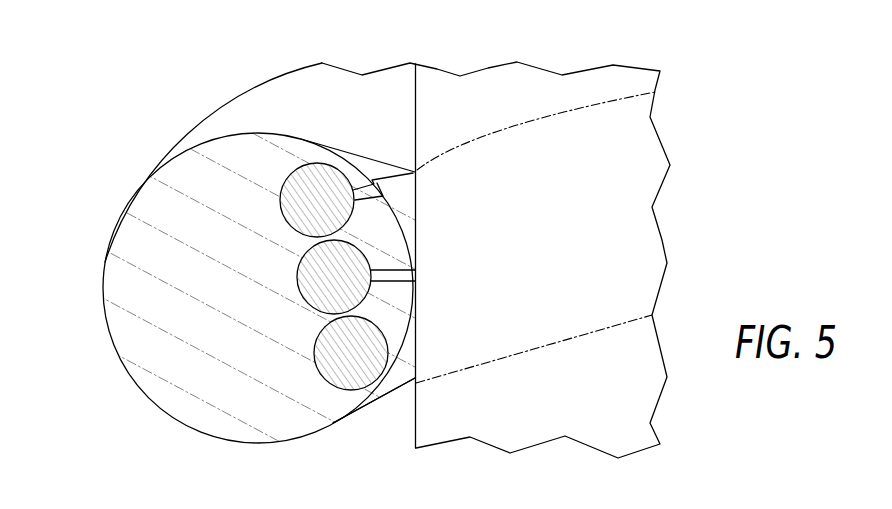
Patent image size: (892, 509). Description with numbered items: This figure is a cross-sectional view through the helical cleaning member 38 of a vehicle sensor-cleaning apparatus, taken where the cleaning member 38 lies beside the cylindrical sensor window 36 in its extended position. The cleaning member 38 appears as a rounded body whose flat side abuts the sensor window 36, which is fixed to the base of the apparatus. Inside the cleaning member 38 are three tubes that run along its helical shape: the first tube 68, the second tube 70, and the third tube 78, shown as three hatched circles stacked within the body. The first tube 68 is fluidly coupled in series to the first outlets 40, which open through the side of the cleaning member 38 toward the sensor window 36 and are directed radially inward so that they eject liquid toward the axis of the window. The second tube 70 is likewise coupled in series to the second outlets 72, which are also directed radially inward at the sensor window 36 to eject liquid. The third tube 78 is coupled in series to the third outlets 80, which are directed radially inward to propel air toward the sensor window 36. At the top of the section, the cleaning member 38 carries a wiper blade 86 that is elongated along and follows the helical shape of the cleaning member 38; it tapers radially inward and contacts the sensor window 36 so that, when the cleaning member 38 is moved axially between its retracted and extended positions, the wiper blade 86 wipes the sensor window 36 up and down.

The sensor window 36 is at (415, 422).
The cleaning member 38 is at (105, 278).
The first outlet 40 is at (383, 188).
The first tube 68 is at (282, 190).
The second tube 70 is at (298, 292).
The second outlet 72 is at (393, 268).
The third tube 78 is at (314, 363).
The third outlet 80 is at (400, 374).
The wiper blade 86 is at (383, 163).